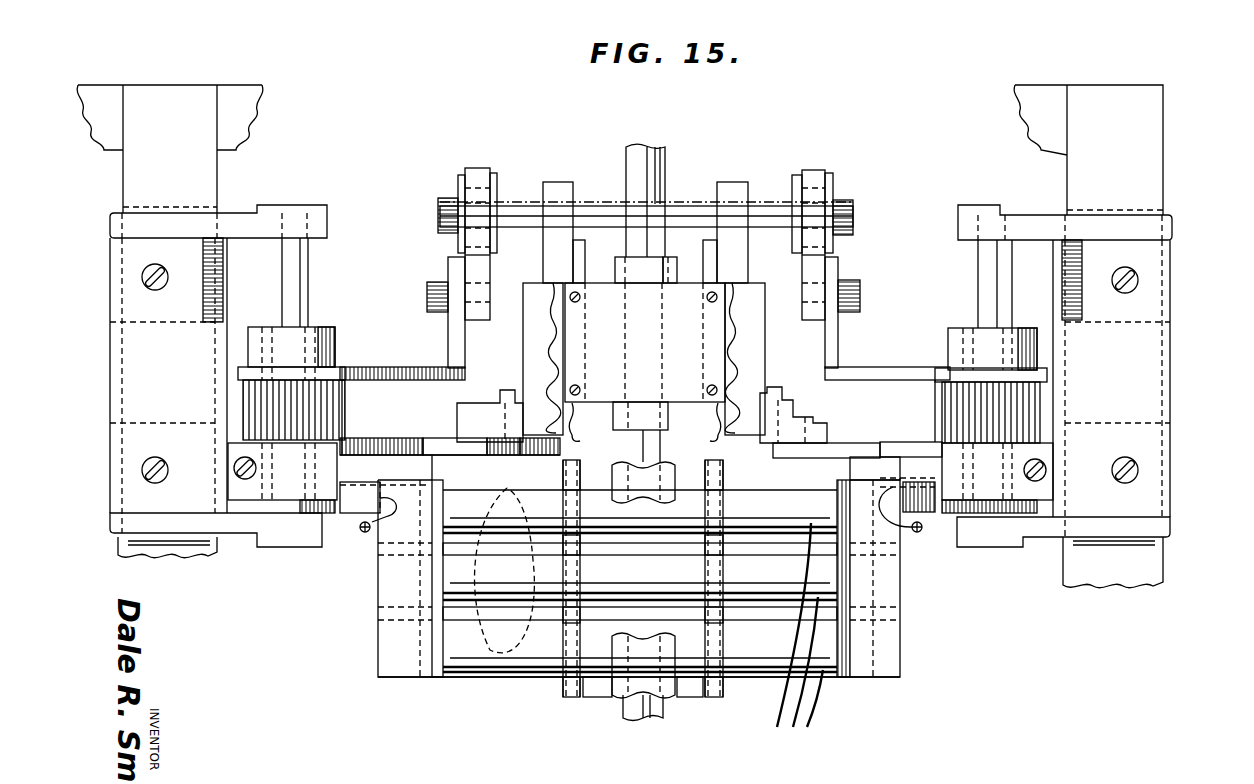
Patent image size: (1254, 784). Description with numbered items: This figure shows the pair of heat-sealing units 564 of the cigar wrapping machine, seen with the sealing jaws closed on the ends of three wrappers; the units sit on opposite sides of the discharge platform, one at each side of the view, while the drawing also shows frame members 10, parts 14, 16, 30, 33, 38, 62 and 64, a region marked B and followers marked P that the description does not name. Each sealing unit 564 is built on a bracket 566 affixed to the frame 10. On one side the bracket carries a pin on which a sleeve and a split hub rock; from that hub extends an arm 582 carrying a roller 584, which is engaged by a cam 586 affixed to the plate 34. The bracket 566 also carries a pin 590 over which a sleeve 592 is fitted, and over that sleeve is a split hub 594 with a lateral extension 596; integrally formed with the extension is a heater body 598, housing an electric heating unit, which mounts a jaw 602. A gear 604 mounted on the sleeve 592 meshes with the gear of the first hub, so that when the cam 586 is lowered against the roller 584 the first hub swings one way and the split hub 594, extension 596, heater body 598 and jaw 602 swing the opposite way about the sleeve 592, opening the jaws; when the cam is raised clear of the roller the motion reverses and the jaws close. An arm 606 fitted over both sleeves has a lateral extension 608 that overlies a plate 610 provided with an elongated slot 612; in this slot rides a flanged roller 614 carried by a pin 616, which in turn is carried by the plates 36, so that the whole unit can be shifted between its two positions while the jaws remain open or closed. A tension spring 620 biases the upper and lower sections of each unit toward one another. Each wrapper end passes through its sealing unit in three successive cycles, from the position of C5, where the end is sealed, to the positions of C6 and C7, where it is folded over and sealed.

The frame 10 is at (163, 93).
The lower shaft support 14 is at (600, 692).
The tie bolts 16 is at (573, 697).
The guide plate 30 is at (570, 425).
The shaft coupling block 33 is at (645, 496).
The plate 34 is at (532, 290).
The plates 36 is at (562, 338).
The bearing housing 38 is at (598, 293).
The vertical drive shaft 62 is at (648, 168).
The shaft bearing block 64 is at (675, 267).
The sealing unit 564 is at (98, 404).
The bracket 566 is at (137, 341).
The arm 582 is at (458, 446).
The roller 584 is at (467, 428).
The cam 586 is at (513, 432).
The pin 590 is at (293, 267).
The sleeve 592 is at (273, 325).
The split hub 594 is at (240, 450).
The lateral extension 596 is at (393, 460).
The heater body 598 is at (387, 614).
The jaw 602 is at (422, 680).
The gear 604 is at (262, 397).
The arm 606 is at (388, 367).
The lateral extension 608 is at (450, 265).
The plate 610 is at (477, 168).
The elongated slot 612 is at (458, 193).
The flanged roller 614 is at (497, 183).
The pin 616 is at (605, 206).
The tension spring 620 is at (637, 493).
The cam B is at (494, 570).
The position C5 is at (640, 651).
The position C6 is at (640, 592).
The position C7 is at (640, 522).
The cam followers P is at (793, 640).